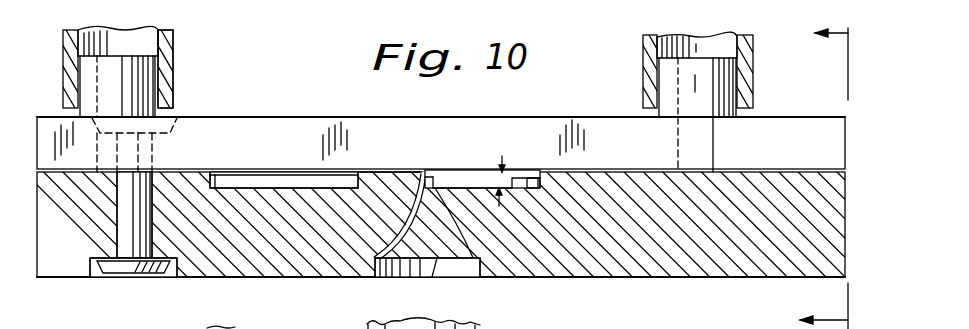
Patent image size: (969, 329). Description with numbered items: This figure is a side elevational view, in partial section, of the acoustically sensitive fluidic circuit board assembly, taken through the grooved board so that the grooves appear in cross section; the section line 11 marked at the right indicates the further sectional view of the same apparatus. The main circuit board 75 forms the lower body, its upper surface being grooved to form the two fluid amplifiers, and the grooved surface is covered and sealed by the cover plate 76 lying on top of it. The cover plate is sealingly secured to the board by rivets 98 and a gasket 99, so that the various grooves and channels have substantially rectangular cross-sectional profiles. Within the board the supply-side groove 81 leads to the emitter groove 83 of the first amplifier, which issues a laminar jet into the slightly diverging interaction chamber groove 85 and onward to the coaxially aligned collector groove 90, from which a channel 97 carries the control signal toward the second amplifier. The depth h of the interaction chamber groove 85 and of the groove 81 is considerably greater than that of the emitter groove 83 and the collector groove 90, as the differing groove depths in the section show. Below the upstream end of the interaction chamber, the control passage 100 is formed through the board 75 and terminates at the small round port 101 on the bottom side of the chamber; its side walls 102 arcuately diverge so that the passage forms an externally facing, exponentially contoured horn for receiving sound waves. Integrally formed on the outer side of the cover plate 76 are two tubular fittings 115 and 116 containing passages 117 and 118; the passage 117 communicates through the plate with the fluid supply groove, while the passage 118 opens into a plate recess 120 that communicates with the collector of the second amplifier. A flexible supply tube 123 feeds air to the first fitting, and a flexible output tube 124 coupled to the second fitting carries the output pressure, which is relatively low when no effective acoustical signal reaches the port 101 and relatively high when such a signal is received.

The main circuit board 75 is at (645, 258).
The cover plate 76 is at (594, 117).
The groove 81 is at (280, 155).
The emitter groove or channel 83 is at (397, 150).
The interaction chamber groove 85 is at (493, 176).
The collector groove or channel 90 is at (520, 174).
The channel 97 is at (535, 182).
The rivets 98 is at (140, 197).
The gasket 99 is at (197, 170).
The control passage 100 is at (432, 278).
The port 101 is at (423, 187).
The side walls 102 is at (440, 226).
The tubular fitting 115 is at (173, 63).
The tubular fitting 116 is at (668, 72).
The passage 117 is at (98, 92).
The passage 118 is at (710, 102).
The plate recess 120 is at (392, 316).
The flexible tube 123 is at (172, 38).
The flexible output tube 124 is at (753, 72).
The depth h is at (503, 156).
The section line 11- 11 is at (808, 174).